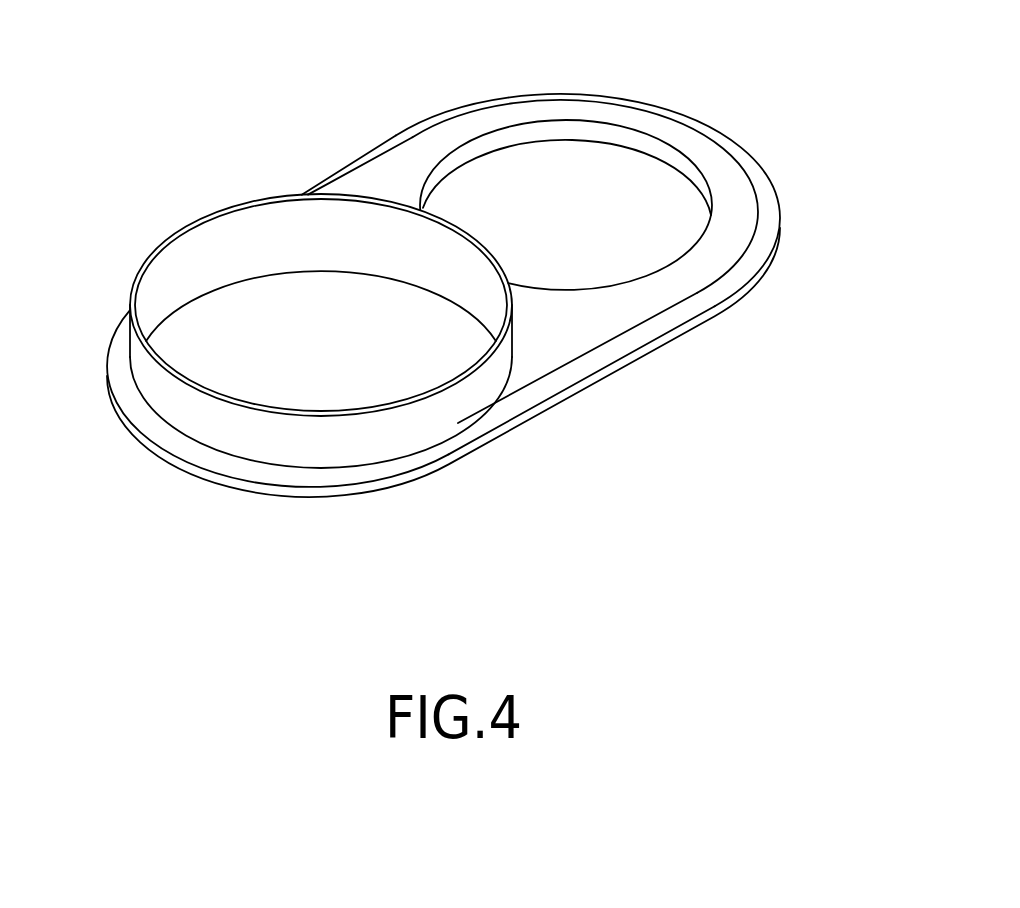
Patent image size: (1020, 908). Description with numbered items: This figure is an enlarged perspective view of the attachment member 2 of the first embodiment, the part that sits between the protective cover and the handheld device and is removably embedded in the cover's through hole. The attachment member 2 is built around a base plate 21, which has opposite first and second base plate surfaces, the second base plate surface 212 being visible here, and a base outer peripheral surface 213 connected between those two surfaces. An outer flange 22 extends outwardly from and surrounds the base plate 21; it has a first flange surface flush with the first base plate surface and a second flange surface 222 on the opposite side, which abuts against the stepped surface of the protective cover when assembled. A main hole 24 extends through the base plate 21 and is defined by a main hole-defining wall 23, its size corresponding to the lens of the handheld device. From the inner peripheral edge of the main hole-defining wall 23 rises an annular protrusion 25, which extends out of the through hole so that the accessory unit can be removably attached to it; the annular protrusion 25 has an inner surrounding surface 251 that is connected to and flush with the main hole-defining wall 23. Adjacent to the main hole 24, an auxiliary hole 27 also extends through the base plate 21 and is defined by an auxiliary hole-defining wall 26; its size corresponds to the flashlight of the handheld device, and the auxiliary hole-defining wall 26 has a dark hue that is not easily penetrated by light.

The attachment member 2 is at (489, 321).
The base plate 21 is at (566, 145).
The second base plate surface 212 is at (383, 187).
The base outer peripheral surface 213 is at (471, 425).
The outer flange 22 is at (782, 196).
The second flange surface 222 is at (704, 308).
The main hole-defining wall 23 is at (304, 342).
The main hole 24 is at (321, 348).
The annular protrusion 25 is at (158, 400).
The inner surrounding surface 251 is at (257, 225).
The auxiliary hole-defining wall 26 is at (618, 137).
The auxiliary hole 27 is at (550, 207).